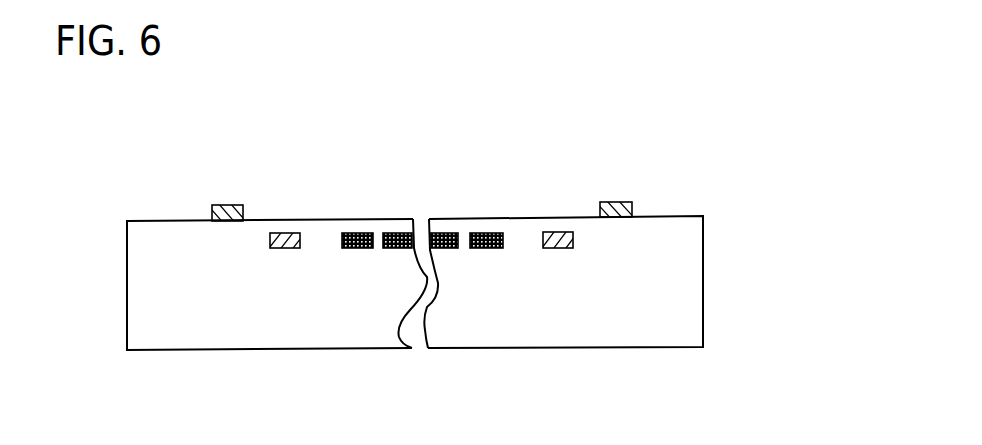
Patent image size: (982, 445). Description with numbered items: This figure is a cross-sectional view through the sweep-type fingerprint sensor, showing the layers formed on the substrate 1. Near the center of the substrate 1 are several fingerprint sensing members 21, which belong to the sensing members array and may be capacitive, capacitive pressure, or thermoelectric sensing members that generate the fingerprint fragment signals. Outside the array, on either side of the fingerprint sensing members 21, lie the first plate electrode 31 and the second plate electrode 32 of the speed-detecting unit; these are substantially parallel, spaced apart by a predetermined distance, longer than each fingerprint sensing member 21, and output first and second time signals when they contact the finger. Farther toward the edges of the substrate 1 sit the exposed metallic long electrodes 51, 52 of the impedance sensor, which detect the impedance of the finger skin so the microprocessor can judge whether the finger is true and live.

The substrate 1 is at (696, 294).
The fingerprint sensing member 21 is at (362, 233).
The first plate electrode 31 is at (286, 233).
The second plate electrode 32 is at (552, 232).
The electrode 51 is at (226, 205).
The electrode 52 is at (611, 203).